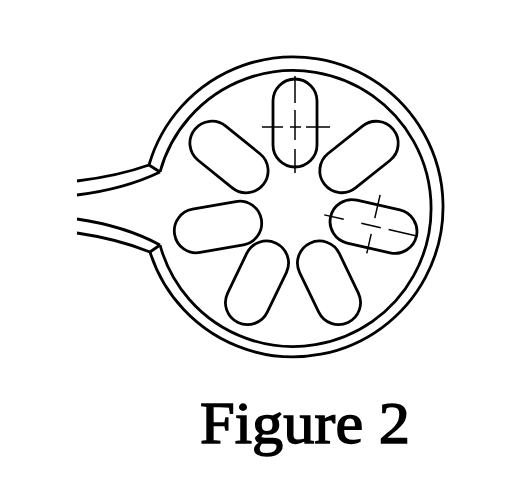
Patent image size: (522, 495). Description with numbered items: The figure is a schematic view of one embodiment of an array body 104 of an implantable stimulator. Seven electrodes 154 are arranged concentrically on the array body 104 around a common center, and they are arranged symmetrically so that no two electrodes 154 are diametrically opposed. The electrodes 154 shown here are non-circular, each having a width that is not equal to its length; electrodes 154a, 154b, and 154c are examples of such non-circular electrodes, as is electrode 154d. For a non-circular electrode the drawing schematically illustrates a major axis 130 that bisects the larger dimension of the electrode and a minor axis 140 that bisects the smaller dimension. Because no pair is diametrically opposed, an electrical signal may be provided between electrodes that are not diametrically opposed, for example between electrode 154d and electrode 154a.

The array body 104 is at (240, 68).
The major axis 130 is at (377, 136).
The minor axis 140 is at (320, 125).
The electrode 154 is at (382, 137).
The electrode 154a is at (287, 93).
The electrode 154b is at (245, 308).
The electrode 154c is at (342, 305).
The electrode 154d is at (212, 137).